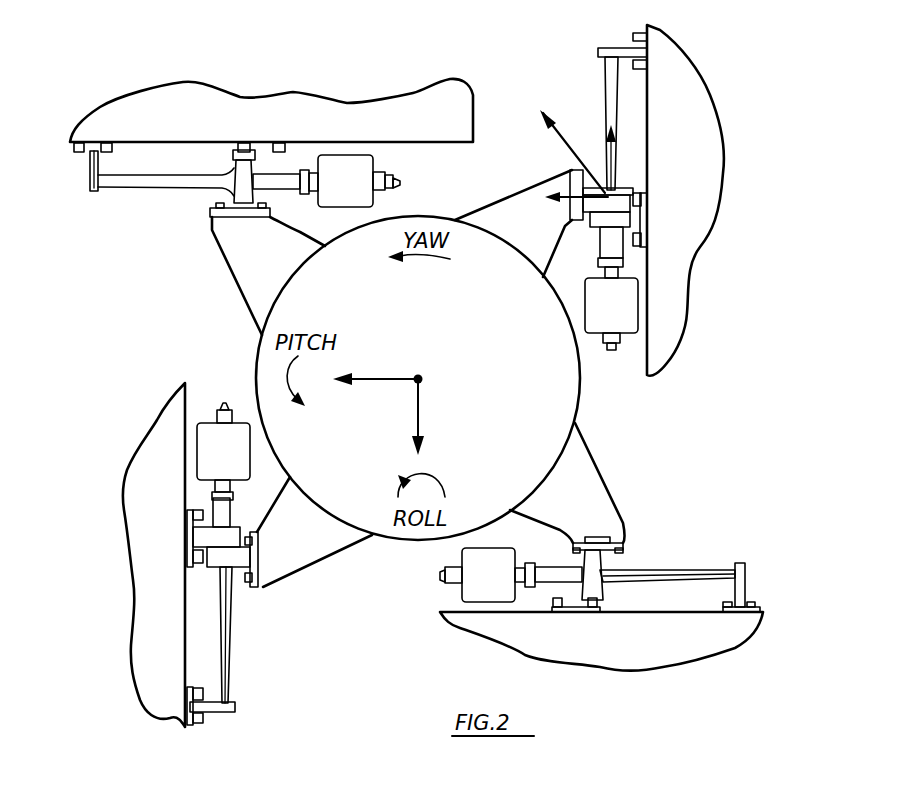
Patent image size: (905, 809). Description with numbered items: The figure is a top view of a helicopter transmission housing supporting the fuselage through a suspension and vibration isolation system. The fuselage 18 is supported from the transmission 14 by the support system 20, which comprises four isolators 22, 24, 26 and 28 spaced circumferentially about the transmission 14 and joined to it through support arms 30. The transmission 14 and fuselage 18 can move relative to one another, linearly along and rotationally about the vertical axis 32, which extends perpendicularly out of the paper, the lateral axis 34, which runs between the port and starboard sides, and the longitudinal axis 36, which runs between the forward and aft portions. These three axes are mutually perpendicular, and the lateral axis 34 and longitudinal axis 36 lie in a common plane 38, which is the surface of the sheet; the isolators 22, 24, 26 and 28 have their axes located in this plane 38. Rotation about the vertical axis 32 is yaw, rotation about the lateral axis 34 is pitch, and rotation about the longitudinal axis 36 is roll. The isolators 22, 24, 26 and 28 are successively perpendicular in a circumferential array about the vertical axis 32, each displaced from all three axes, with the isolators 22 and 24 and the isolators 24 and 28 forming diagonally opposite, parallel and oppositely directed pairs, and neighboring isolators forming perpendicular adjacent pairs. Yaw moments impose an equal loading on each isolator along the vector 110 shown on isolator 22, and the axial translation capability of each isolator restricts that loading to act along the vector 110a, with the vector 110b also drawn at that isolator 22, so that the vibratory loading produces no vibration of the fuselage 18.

The transmission 14 is at (513, 306).
The fuselage 18 is at (455, 121).
The support system 20 is at (152, 192).
The isolator 22 is at (620, 177).
The isolator 24 is at (198, 176).
The isolator 26 is at (230, 652).
The isolator 28 is at (683, 570).
The support arm 30 is at (237, 266).
The vertical axis 32 is at (424, 374).
The lateral axis 34 is at (378, 382).
The longitudinal axis 36 is at (420, 397).
The common plane 38 is at (355, 486).
The vector 110 is at (566, 135).
The vector 110a is at (565, 207).
The force component 110b is at (620, 163).